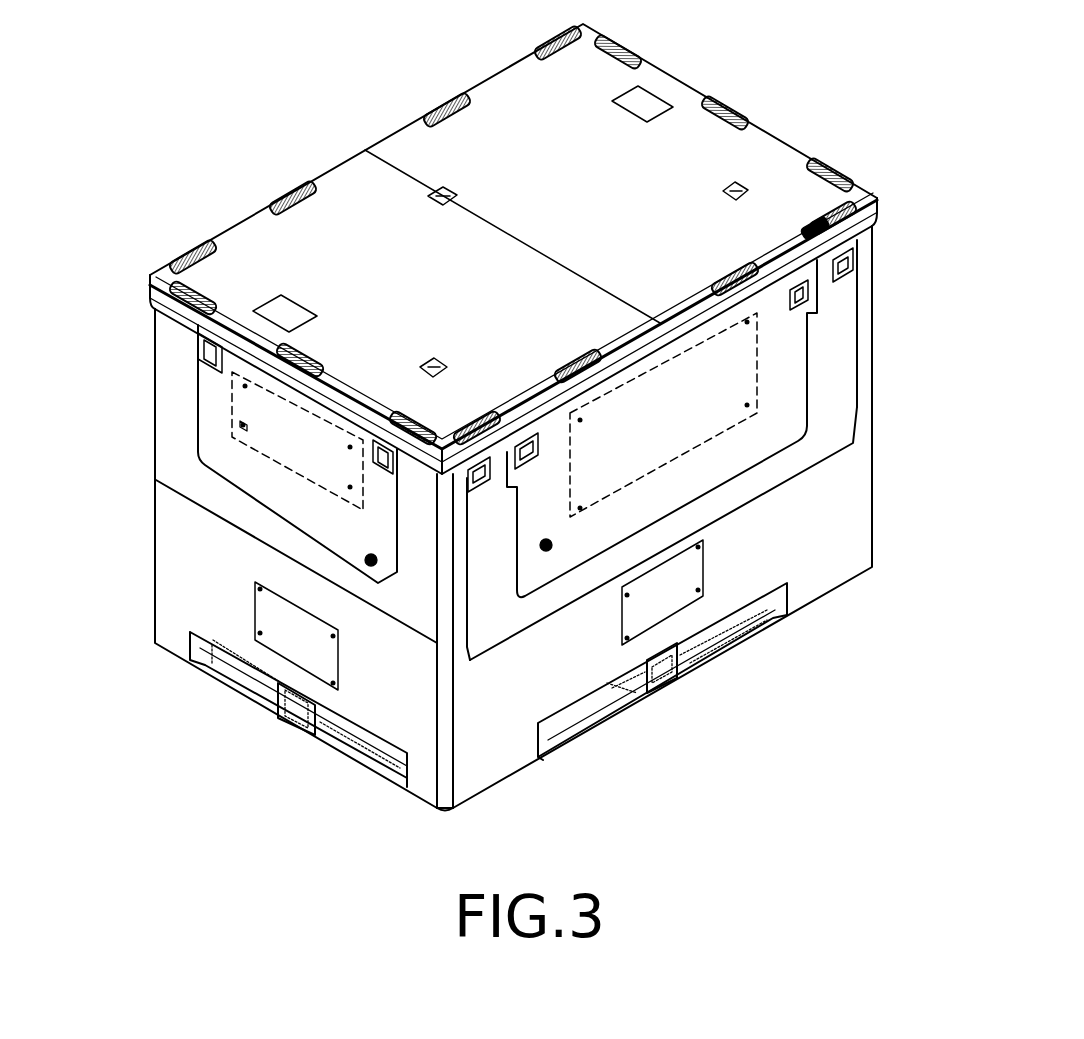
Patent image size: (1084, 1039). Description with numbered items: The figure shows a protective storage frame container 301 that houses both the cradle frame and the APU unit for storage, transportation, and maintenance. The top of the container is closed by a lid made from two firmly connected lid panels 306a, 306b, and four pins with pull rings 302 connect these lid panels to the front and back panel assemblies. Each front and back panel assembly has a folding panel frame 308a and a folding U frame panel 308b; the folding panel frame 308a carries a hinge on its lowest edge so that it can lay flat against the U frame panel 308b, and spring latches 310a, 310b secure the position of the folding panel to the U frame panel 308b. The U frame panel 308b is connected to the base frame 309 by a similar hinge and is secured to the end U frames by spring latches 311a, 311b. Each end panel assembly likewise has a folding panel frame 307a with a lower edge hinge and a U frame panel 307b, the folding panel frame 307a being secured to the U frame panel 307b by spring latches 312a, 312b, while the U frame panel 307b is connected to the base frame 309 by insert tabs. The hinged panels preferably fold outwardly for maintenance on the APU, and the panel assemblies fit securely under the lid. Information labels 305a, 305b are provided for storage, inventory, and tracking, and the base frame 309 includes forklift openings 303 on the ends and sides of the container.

The frame container 301 is at (212, 63).
The pins with pull rings 302 is at (530, 60).
The forklift openings 303 is at (235, 690).
The information label 305a is at (673, 435).
The information label 305b is at (223, 418).
The lid panel 306a is at (383, 195).
The lid panel 306b is at (518, 120).
The folding panel frame 307a is at (373, 450).
The U frame panel 307b is at (195, 488).
The folding panel frame 308a is at (792, 392).
The folding U frame panel 308b is at (828, 413).
The base frame 309 is at (845, 517).
The spring latch 310a is at (813, 283).
The spring latch 310b is at (530, 463).
The spring latch 311a is at (858, 263).
The spring latch 311b is at (482, 490).
The spring latch 312a is at (253, 365).
The spring latch 312b is at (250, 417).